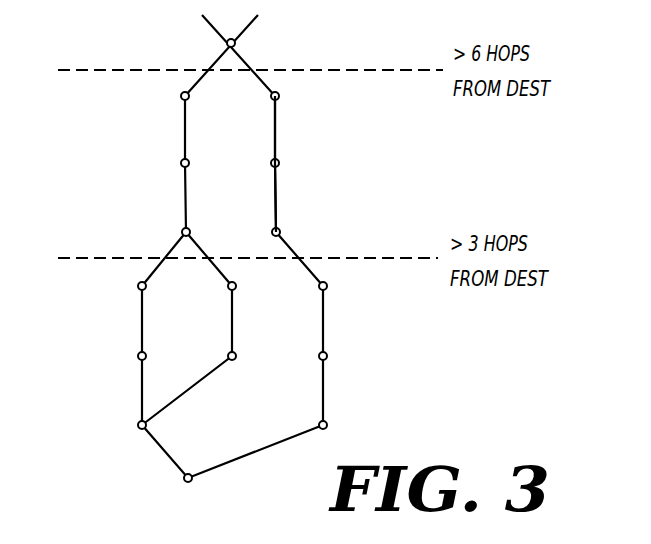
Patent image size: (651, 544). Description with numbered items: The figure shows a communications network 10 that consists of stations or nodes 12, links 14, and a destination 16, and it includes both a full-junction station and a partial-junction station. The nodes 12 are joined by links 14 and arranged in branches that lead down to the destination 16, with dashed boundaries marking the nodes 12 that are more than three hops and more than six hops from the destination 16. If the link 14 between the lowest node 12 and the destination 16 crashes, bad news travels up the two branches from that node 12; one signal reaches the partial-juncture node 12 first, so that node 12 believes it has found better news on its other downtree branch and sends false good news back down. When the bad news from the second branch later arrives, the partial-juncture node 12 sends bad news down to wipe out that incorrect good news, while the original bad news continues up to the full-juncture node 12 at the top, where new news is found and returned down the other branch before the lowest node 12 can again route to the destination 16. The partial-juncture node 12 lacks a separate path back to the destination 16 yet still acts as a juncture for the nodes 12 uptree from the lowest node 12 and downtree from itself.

The communications network 10 is at (293, 40).
The stations or nodes 12 is at (139, 289).
The links 14 is at (277, 128).
The destination 16 is at (189, 474).